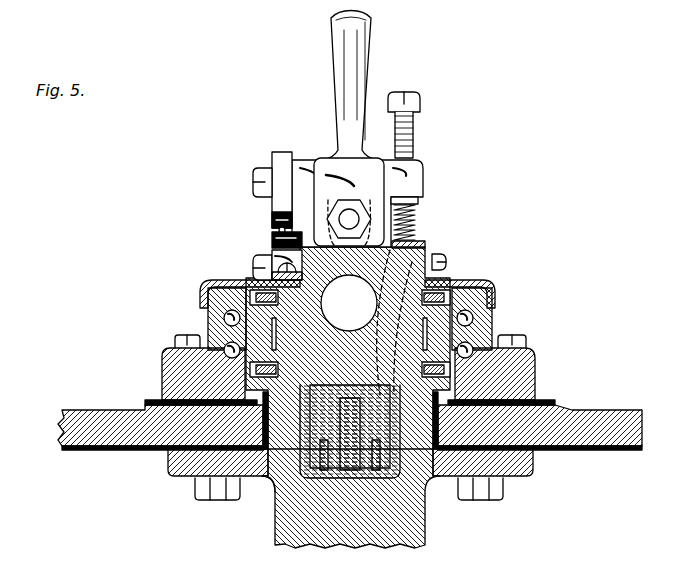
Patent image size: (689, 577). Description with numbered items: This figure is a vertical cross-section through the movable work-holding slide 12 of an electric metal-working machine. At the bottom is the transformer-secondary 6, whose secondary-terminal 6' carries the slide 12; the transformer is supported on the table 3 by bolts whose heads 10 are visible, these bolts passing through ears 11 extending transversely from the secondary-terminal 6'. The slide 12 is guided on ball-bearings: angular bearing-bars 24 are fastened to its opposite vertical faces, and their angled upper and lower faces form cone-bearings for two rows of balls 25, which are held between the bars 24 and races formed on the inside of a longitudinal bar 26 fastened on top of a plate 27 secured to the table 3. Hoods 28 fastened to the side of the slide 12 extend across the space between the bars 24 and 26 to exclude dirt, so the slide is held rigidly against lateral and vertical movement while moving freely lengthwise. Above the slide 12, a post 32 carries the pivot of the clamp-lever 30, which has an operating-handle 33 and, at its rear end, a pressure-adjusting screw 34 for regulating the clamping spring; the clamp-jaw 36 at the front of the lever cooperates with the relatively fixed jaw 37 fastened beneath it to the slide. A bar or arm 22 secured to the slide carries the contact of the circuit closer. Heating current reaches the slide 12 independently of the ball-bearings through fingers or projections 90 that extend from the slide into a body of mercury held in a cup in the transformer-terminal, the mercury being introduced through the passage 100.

The table 3 is at (580, 411).
The transformer-secondary 6 is at (348, 408).
The secondary-terminals 6' is at (259, 501).
The bolt heads 10 is at (504, 494).
The ears 11 is at (168, 470).
The work-holding slide 12 is at (447, 260).
The bar or arm 22 is at (428, 246).
The angular bearing-bars 24 is at (226, 320).
The balls 25 is at (494, 298).
The longitudinal bar 26 is at (494, 315).
The plate 27 is at (536, 386).
The hoods 28 is at (232, 282).
The clamp-lever 30 is at (306, 165).
The post 32 is at (349, 202).
The operating-handle 33 is at (330, 56).
The pressure-adjusting screw 34 is at (420, 136).
The clamp-jaw 36 is at (282, 164).
The fixed jaw 37 is at (276, 238).
The fingers or projections 90 is at (372, 440).
The passage 100 is at (418, 240).